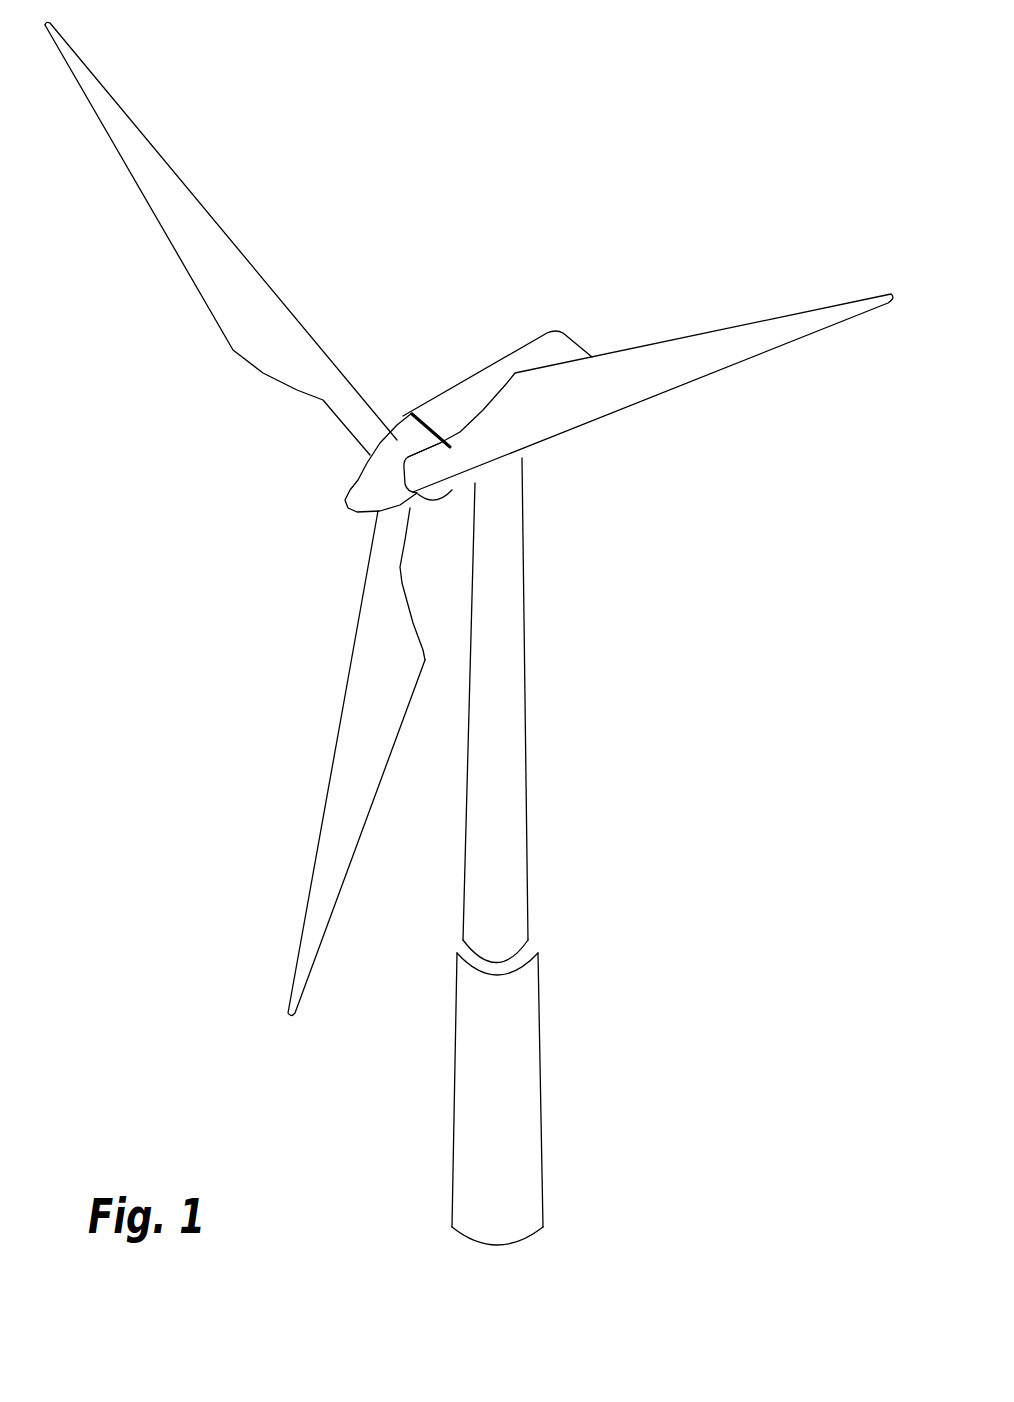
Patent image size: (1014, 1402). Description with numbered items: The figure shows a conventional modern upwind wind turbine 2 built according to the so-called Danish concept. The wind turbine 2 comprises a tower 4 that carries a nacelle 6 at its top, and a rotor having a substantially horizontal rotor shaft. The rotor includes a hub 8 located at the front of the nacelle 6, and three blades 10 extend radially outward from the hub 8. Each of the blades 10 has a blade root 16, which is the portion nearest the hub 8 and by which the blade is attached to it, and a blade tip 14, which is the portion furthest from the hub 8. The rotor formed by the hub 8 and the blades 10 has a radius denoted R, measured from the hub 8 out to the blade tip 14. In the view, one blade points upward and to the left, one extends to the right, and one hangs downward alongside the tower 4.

The wind turbine 2 is at (627, 787).
The tower 4 is at (517, 705).
The nacelle 6 is at (460, 398).
The hub 8 is at (372, 482).
The blades 10 is at (250, 332).
The blade tip 14 is at (98, 83).
The blade root 16 is at (373, 440).